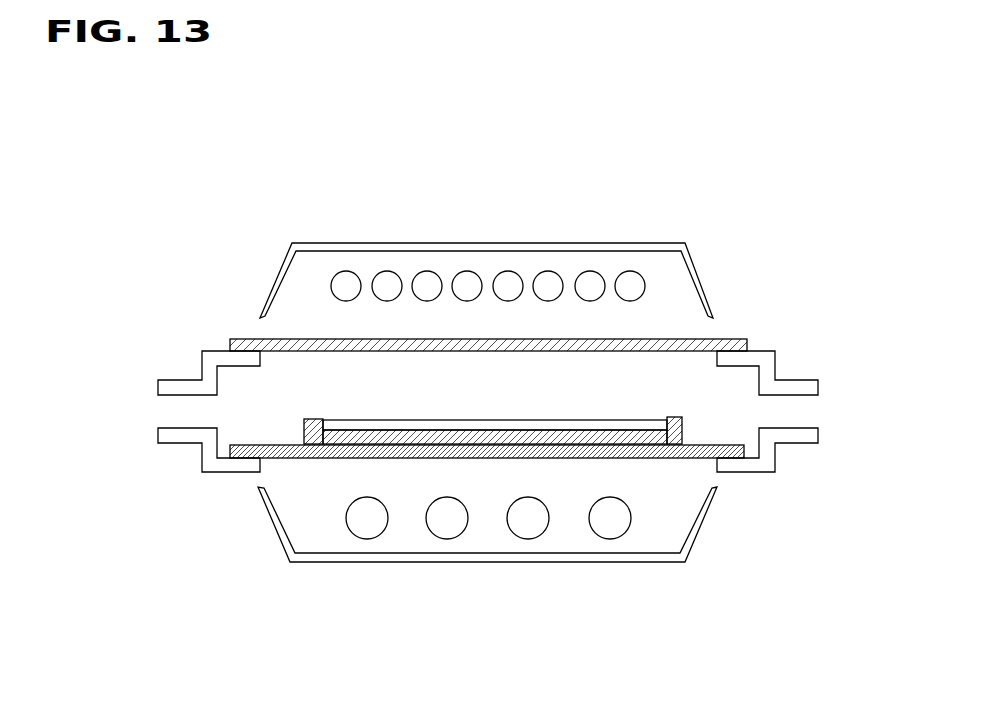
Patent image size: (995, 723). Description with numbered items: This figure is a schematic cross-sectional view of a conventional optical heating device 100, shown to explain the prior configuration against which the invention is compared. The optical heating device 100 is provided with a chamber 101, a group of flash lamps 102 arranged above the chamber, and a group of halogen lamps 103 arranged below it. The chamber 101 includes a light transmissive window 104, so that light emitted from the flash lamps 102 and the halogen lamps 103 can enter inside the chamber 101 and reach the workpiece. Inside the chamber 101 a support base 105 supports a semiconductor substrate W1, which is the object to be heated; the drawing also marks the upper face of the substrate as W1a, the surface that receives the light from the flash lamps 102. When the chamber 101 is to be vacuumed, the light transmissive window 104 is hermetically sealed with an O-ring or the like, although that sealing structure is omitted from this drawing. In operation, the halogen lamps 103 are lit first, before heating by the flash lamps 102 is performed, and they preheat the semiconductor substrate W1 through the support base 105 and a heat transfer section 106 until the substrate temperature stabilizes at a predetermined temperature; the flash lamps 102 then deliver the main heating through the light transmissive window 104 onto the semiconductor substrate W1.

The optical heating device 100 is at (132, 163).
The chamber 101 is at (160, 328).
The flash lamps 102 is at (337, 270).
The halogen lamps 103 is at (362, 535).
The light transmissive window 104 is at (650, 345).
The support base 105 is at (715, 448).
The heat transfer section 106 is at (230, 450).
The semiconductor substrate W1 is at (649, 423).
The front surface of substrate W1a is at (338, 420).